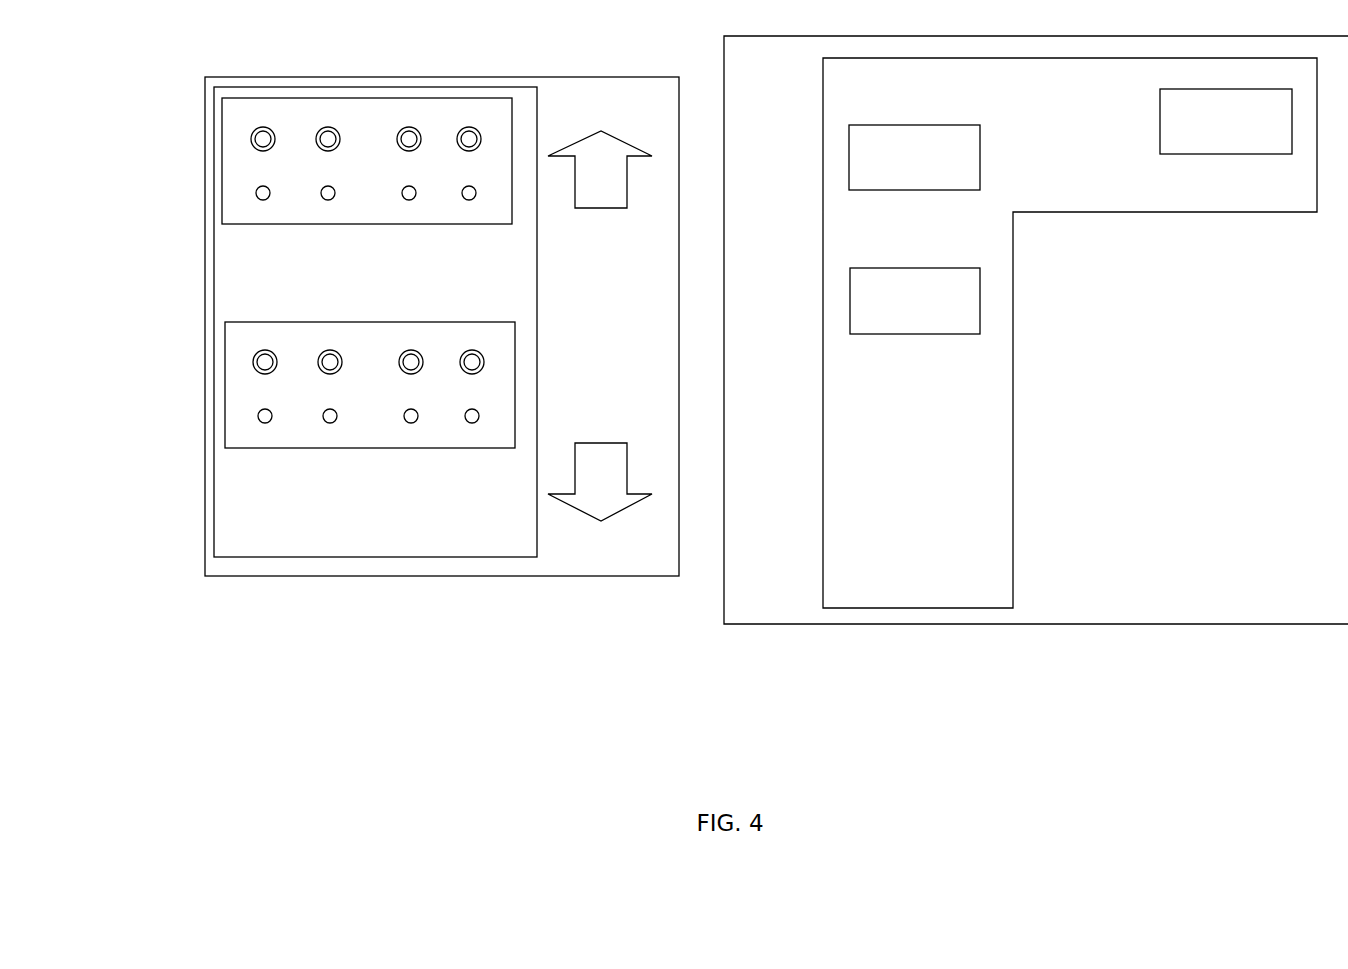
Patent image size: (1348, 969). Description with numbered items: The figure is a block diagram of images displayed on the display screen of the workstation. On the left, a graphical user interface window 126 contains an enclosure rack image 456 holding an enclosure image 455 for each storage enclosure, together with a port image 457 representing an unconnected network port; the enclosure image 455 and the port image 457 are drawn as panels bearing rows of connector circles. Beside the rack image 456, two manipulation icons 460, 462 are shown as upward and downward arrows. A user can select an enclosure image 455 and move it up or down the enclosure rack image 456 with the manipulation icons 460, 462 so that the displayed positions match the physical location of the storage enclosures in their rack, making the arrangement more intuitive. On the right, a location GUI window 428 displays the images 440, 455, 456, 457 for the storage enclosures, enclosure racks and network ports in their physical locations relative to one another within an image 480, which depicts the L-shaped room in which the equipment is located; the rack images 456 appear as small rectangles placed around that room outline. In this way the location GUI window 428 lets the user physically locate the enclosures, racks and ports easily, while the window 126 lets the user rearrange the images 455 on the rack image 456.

The graphical user interface window 126 is at (204, 577).
The location GUI window 428 is at (780, 625).
The image 440 is at (222, 147).
The enclosure image 455 is at (225, 387).
The enclosure rack image 456 is at (213, 195).
The port image 457 is at (256, 360).
The manipulation icon 460 is at (600, 208).
The manipulation icon 462 is at (598, 443).
The image 480 is at (1161, 212).